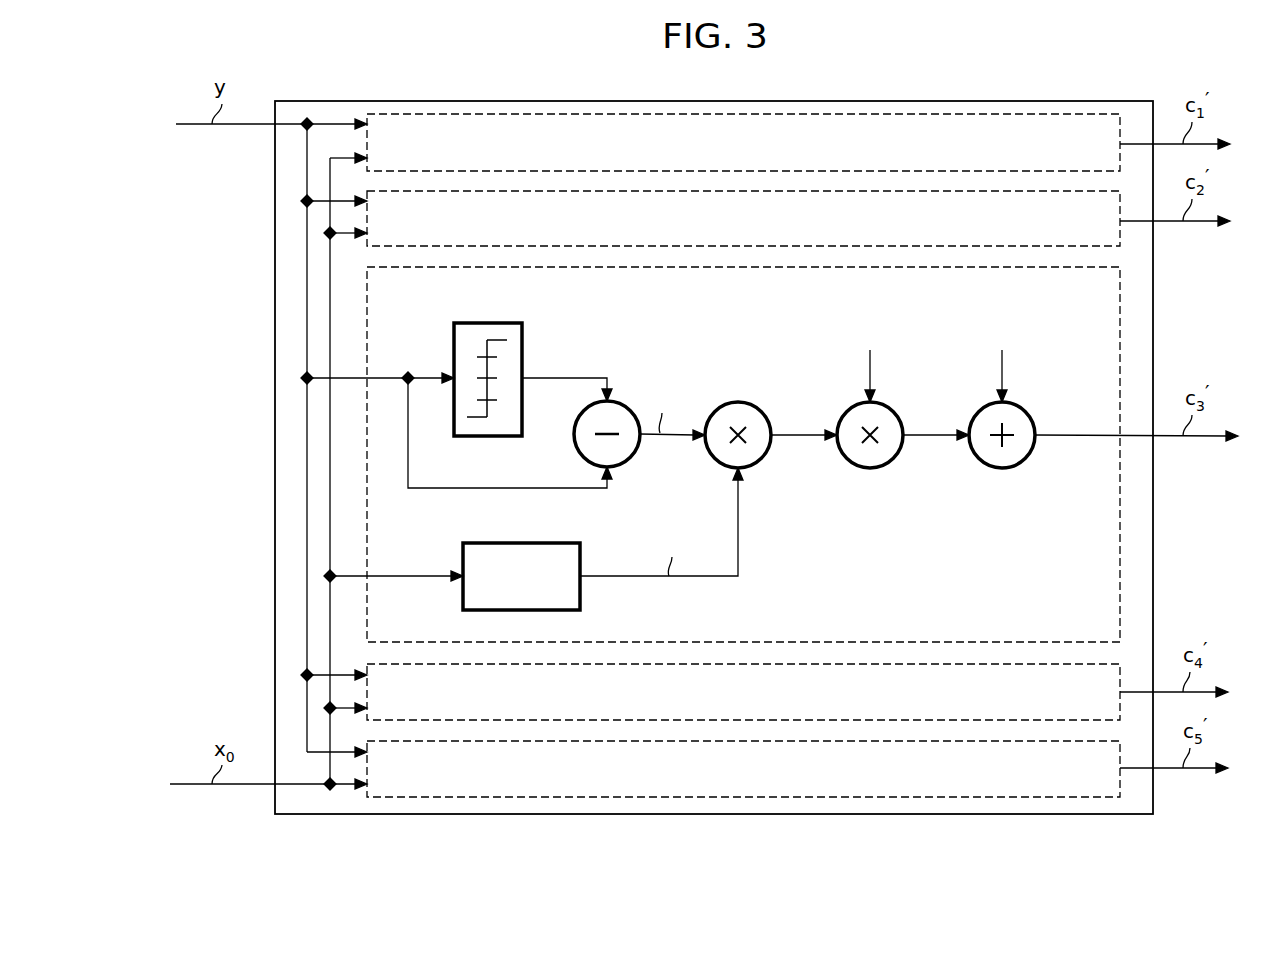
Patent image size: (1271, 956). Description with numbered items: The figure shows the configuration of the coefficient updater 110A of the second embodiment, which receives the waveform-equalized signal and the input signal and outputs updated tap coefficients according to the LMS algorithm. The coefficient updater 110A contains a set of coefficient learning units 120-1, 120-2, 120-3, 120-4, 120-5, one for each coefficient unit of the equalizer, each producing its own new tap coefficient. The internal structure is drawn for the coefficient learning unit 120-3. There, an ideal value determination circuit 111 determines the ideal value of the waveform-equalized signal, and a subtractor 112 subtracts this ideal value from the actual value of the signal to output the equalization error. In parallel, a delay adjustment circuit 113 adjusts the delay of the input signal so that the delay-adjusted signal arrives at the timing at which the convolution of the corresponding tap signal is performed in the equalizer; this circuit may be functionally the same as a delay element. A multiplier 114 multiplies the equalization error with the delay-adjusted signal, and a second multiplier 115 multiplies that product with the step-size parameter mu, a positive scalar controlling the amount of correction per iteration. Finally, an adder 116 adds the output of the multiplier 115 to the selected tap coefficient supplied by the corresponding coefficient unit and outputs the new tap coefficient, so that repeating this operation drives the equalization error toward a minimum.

The coefficient updater 110A is at (1103, 85).
The coefficient learning unit 120-1 is at (798, 142).
The coefficient learning unit 120-2 is at (798, 218).
The coefficient learning unit 120-3 is at (1120, 327).
The coefficient learning unit 120-4 is at (797, 692).
The coefficient learning unit 120-5 is at (797, 769).
The ideal value determination circuit 111 is at (498, 322).
The subtractor 112 is at (630, 460).
The delay adjustment circuit 113 is at (530, 543).
The multiplier 114 is at (741, 402).
The multiplier 115 is at (900, 463).
The adder 116 is at (1025, 463).